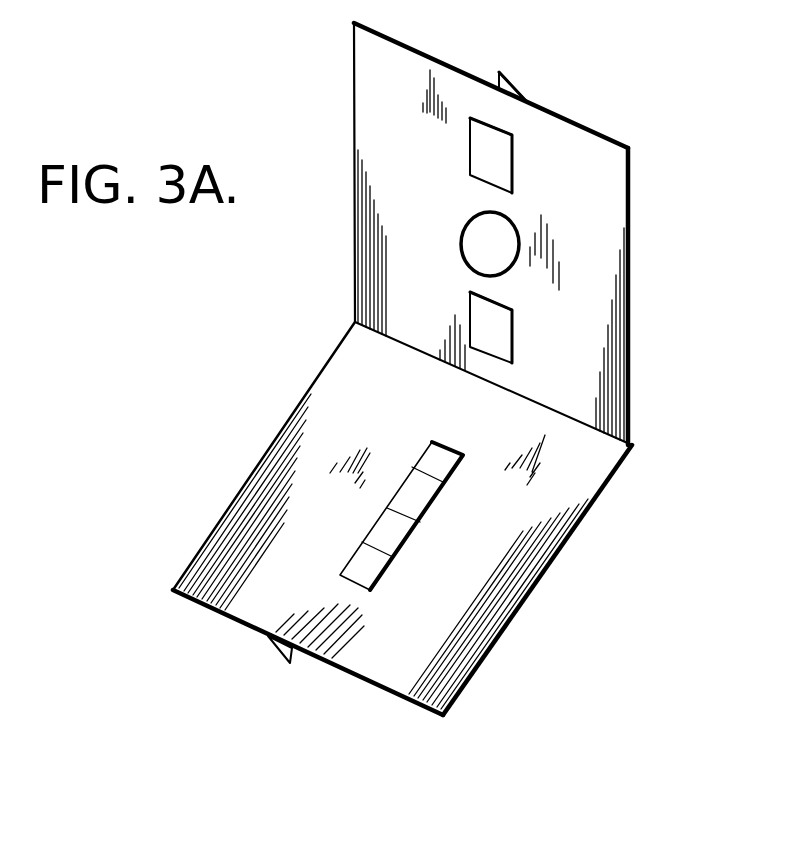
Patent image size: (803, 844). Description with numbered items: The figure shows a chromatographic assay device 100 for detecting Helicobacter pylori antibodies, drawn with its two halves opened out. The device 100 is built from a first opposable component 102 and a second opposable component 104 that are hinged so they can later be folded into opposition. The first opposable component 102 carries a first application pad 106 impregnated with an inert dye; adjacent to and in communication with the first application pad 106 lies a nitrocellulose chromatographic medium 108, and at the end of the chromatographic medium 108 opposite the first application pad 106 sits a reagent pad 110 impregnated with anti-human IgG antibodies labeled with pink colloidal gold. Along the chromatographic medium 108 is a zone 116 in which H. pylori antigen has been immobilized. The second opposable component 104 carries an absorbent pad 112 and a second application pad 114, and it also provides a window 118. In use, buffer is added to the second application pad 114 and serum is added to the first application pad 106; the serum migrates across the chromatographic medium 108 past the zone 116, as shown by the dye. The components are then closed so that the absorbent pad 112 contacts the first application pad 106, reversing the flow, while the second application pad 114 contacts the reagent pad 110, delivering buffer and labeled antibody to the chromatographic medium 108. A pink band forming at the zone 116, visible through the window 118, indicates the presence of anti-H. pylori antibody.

The device 100 is at (303, 344).
The first opposable component 102 is at (473, 613).
The second opposable component 104 is at (570, 133).
The first application pad 106 is at (417, 462).
The chromatographic medium 108 is at (418, 498).
The reagent pad 110 is at (353, 578).
The absorbent pad 112 is at (513, 337).
The second application pad 114 is at (470, 133).
The zone 116 is at (398, 510).
The window 118 is at (520, 244).